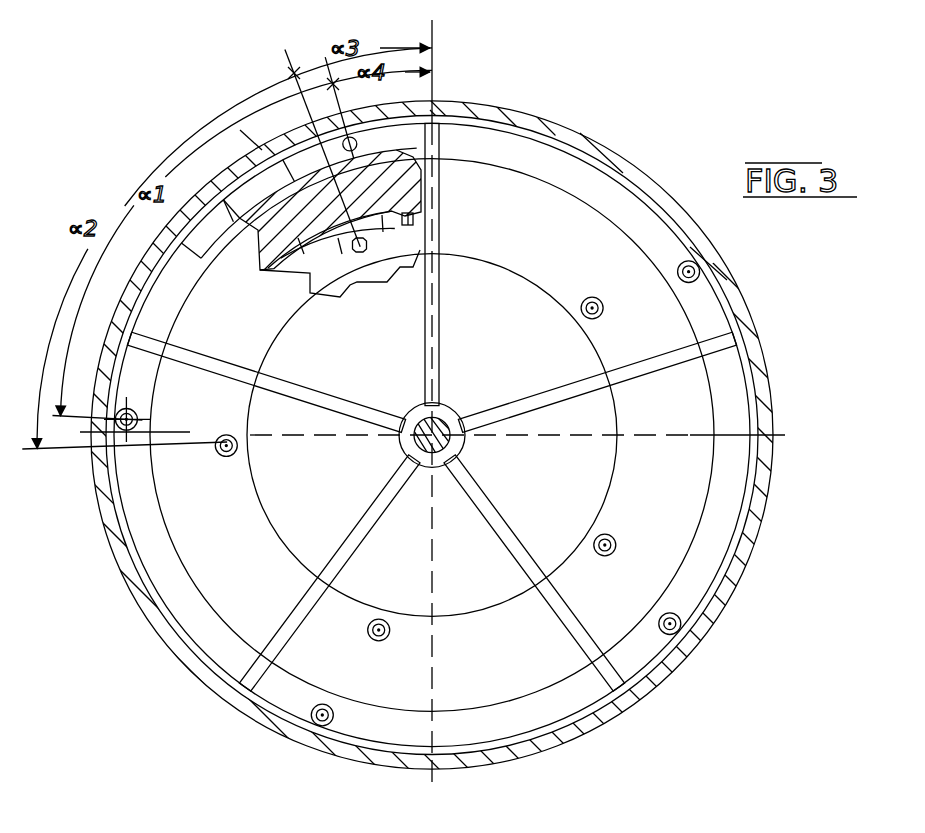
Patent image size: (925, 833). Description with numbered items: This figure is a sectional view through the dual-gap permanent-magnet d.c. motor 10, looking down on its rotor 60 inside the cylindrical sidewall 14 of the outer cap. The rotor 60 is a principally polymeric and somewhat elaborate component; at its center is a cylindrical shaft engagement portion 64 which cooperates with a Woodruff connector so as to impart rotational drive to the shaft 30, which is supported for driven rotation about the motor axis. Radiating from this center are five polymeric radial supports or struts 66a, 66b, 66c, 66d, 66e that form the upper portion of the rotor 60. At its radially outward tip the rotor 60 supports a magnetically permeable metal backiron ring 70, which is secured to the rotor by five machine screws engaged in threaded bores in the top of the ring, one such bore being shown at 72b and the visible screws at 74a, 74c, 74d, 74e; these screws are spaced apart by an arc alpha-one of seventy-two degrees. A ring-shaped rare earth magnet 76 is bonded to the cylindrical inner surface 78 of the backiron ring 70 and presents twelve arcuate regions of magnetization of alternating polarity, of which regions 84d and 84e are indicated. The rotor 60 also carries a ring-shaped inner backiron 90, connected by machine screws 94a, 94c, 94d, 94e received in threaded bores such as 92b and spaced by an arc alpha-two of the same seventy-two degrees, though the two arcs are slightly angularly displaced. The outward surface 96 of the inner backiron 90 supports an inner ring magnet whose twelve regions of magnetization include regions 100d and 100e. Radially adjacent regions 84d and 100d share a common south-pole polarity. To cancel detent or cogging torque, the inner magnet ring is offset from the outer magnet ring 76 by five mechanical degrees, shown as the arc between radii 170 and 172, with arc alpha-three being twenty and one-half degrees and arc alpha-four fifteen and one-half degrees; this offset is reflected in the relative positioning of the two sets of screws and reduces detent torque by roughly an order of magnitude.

The PM motor 10 is at (712, 60).
The cylindrical sidewall 14 is at (572, 124).
The shaft 30 is at (441, 423).
The rotor 60 is at (235, 583).
The cylindrical shaft engagement portion 64 is at (453, 450).
The radial support or strut 66a is at (648, 363).
The radial support or strut 66b is at (433, 212).
The radial support or strut 66c is at (190, 352).
The radial support or strut 66d is at (286, 633).
The radial support or strut 66e is at (573, 615).
The backiron ring 70 is at (405, 138).
The threaded bore 72b is at (350, 136).
The machine screw 74a is at (700, 273).
The machine screw 74c is at (136, 412).
The machine screw 74d is at (312, 722).
The machine screw 74e is at (682, 628).
The ring-shaped rare earth magnet 76 is at (228, 236).
The cylindrical inner surface 78 is at (233, 224).
The outer radial boundary defined region of magnetization 84d is at (438, 102).
The outer radial boundary defined region of magnetization 84e is at (246, 99).
The inner backiron 90 is at (392, 246).
The threaded bore 92b is at (355, 254).
The machine screw 94a is at (604, 307).
The machine screw 94c is at (227, 457).
The machine screw 94d is at (378, 618).
The machine screw 94e is at (612, 535).
The outward surface 96 is at (413, 193).
The inner radial boundary defined region of magnetization 100d is at (389, 238).
The inner radial boundary defined region of magnetization 100e is at (317, 252).
The radius 170 is at (283, 46).
The radius 172 is at (332, 78).